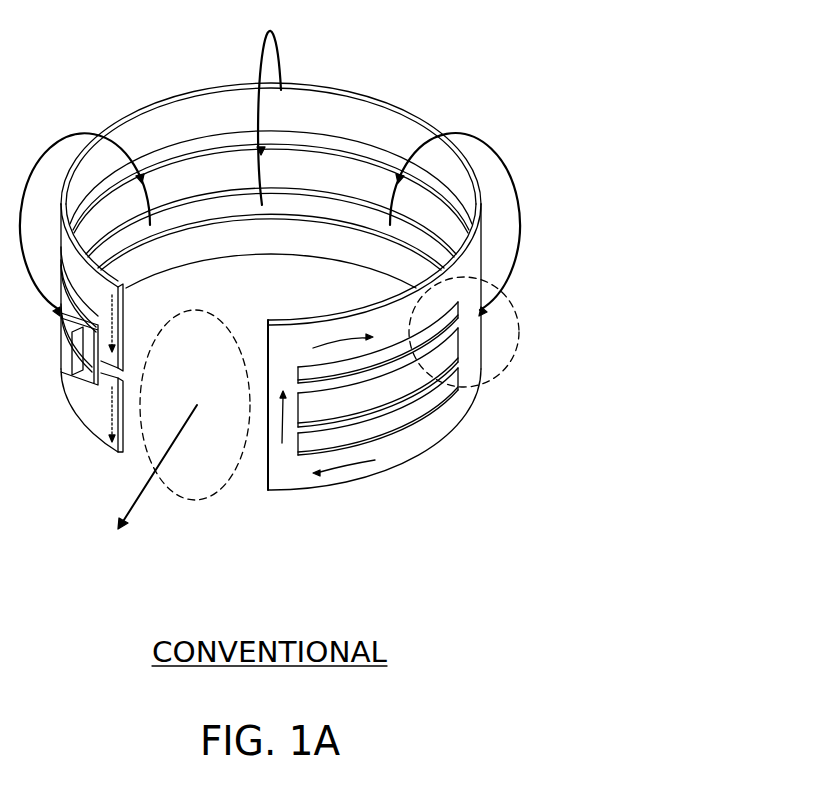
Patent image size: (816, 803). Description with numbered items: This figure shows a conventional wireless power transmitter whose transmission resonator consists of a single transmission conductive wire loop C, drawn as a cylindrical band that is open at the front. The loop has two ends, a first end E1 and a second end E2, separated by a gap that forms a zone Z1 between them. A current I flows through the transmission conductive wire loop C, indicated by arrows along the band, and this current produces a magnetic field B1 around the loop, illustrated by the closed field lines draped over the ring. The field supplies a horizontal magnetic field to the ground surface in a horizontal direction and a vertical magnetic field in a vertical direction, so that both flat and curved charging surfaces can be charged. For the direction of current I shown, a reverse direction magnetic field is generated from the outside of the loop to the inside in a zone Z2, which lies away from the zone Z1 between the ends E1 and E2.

The transmission conductive wire loop C is at (357, 93).
The magnetic field B1 is at (460, 133).
The first end of the transmission conductive wire loop E1 is at (124, 292).
The second end of the transmission conductive wire loop E2 is at (268, 323).
The zone between both ends Z1 is at (228, 490).
The zone of reverse direction magnetic field Z2 is at (513, 367).
The current I is at (348, 463).